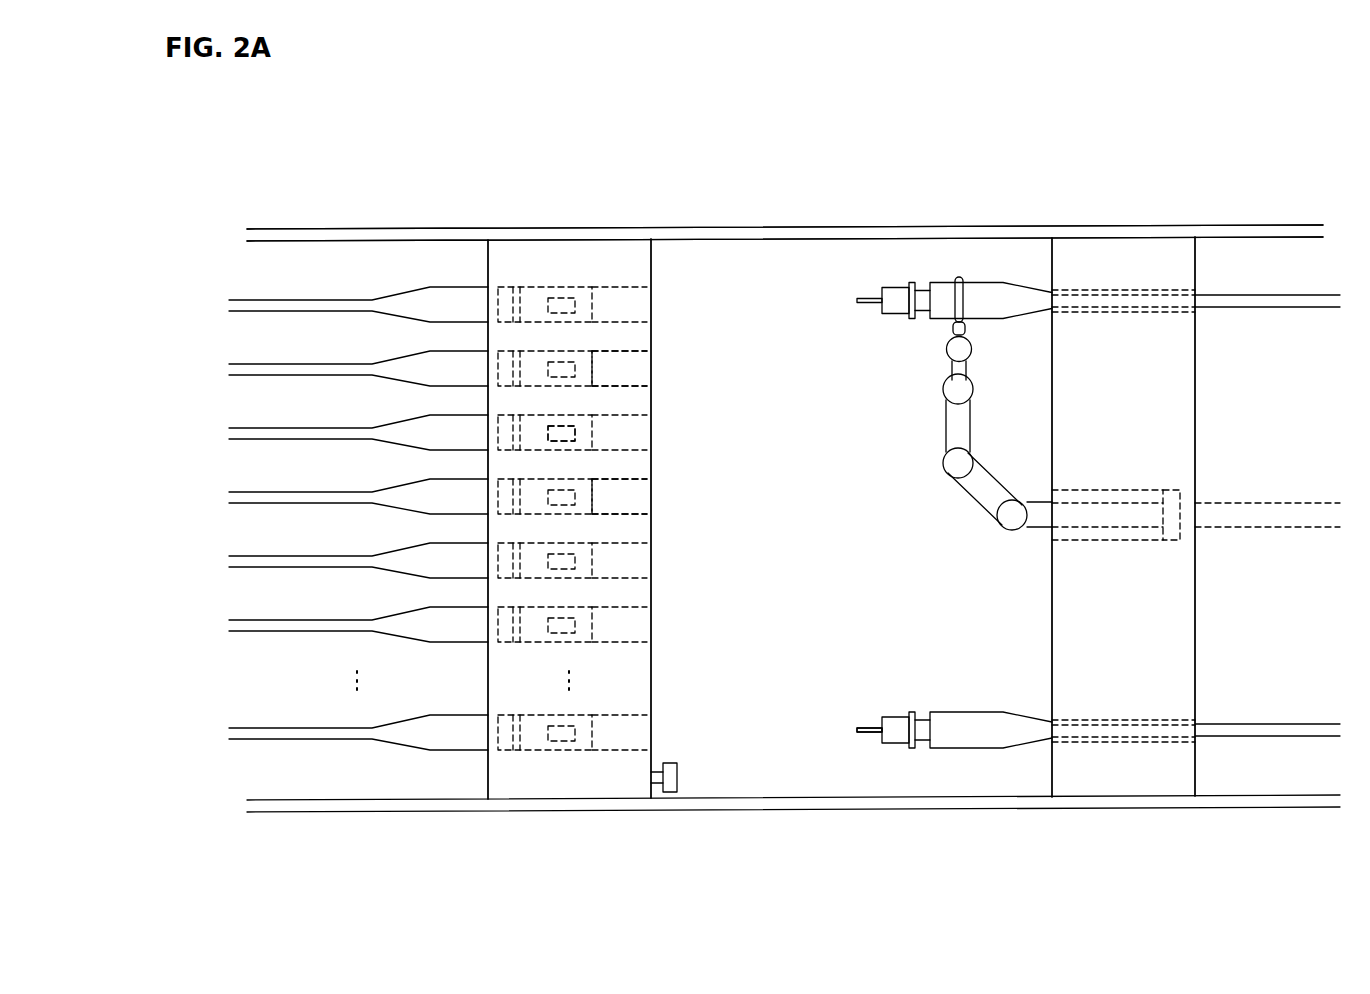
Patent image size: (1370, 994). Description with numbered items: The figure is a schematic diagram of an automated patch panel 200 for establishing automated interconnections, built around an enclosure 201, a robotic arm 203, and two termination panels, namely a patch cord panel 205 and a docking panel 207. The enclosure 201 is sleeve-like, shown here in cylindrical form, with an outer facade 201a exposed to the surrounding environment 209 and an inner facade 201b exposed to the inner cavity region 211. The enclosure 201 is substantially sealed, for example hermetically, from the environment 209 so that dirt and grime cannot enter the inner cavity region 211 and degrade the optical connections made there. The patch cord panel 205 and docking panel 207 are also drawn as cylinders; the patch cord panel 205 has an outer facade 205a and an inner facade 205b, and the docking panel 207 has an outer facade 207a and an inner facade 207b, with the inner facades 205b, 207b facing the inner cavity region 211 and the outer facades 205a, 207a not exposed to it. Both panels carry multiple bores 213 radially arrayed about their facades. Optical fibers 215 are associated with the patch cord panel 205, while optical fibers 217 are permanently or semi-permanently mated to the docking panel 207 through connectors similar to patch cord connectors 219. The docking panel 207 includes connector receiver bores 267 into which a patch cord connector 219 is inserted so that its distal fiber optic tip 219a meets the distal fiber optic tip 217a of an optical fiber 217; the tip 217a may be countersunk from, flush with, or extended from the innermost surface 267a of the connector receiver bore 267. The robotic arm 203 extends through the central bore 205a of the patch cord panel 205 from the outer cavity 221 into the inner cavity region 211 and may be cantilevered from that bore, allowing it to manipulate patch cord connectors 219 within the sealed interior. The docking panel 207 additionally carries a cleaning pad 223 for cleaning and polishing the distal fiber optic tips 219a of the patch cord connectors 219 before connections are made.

The automated patch panel 200 is at (708, 163).
The enclosure 201 is at (928, 228).
The outer facade 201a is at (778, 226).
The inner facade 201b is at (775, 242).
The robotic arm 203 is at (972, 497).
The patch cord panel 205 is at (1087, 777).
The outer facade / central bore of patch cord panel 205a is at (1120, 489).
The inner facade of patch cord panel 205b is at (1052, 642).
The docking panel 207 is at (572, 780).
The outer facade of docking panel 207a is at (482, 778).
The inner facade of docking panel 207b is at (651, 678).
The environment 209 is at (793, 848).
The inner cavity region 211 is at (850, 430).
The bores (ports) 213 is at (565, 288).
The optical fibers of patch cord panel 215 is at (1252, 295).
The optical fibers of docking panel 217 is at (315, 300).
The distal fiber optic tip 217a is at (575, 433).
The patch cord connector 219 is at (945, 712).
The distal fiber optic tip of patch cord connector 219a is at (858, 730).
The outer cavity 221 is at (1283, 428).
The cleaning pad 223 is at (677, 778).
The connector receiver bore 267 is at (635, 368).
The innermost surface of connector receiver bore 267a is at (590, 496).